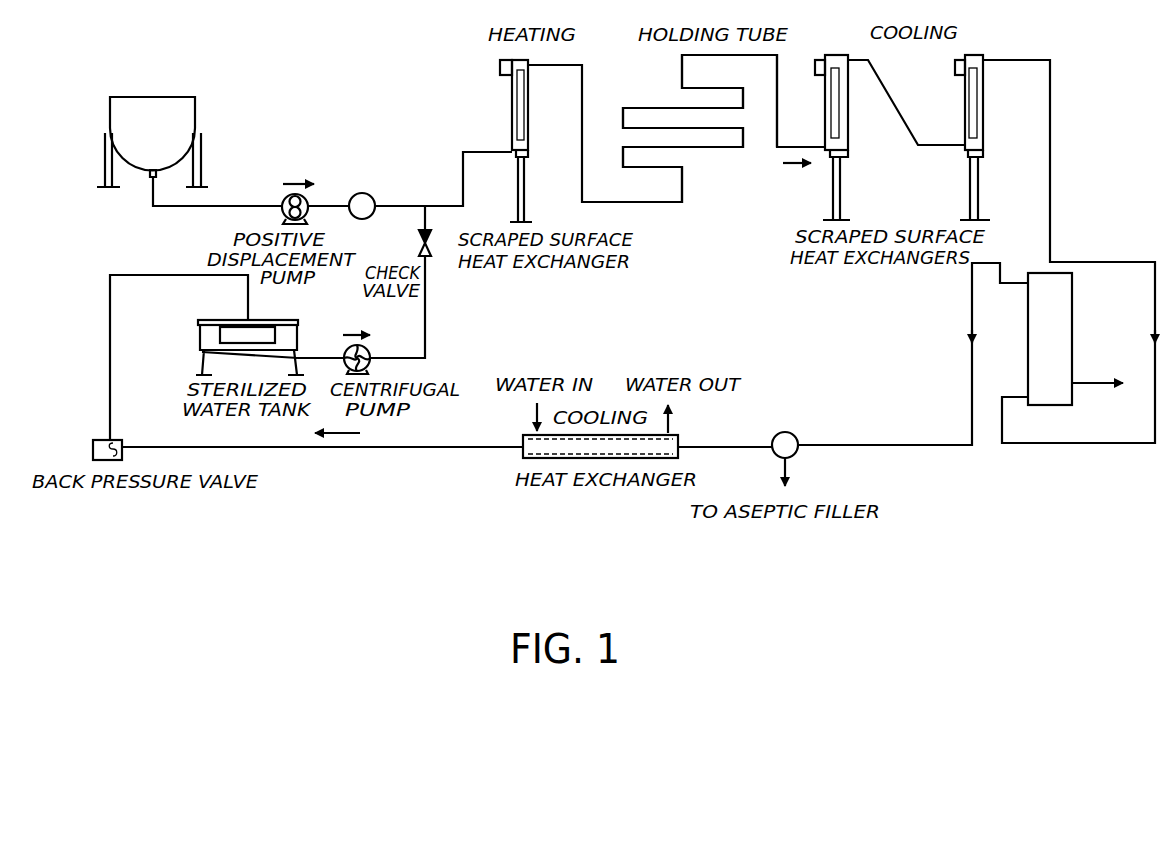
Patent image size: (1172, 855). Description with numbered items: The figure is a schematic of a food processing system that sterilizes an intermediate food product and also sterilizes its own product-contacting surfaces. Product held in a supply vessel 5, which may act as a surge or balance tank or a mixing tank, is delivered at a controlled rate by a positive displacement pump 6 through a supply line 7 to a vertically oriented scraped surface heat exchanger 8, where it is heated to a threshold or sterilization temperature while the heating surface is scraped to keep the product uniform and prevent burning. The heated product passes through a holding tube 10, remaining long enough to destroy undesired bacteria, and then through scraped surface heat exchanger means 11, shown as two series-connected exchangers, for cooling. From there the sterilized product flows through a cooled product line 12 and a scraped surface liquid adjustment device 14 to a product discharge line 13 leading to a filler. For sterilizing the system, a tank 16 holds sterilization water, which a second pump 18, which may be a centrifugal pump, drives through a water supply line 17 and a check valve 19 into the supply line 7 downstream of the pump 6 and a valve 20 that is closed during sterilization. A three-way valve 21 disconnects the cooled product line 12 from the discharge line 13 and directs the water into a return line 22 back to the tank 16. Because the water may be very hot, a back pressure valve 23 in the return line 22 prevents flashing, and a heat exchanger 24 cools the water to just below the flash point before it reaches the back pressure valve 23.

The supply vessel 5 is at (110, 114).
The positive displacement pump 6 is at (282, 200).
The supply line 7 is at (463, 166).
The scraped surface heat exchanger 8 is at (511, 96).
The holding tube 10 is at (682, 67).
The scraped surface heat exchanger means 11 is at (972, 185).
The cooled product line 12 is at (1051, 212).
The product discharge line 13 is at (788, 470).
The scraped surface liquid adjustment device 14 is at (1073, 320).
The tank 16 is at (200, 348).
The water supply line 17 is at (427, 331).
The second pump 18 is at (371, 362).
The check valve 19 is at (419, 250).
The valve 20 is at (374, 198).
The 3-way valve 21 is at (812, 410).
The line 22 is at (318, 450).
The back pressure valve 23 is at (93, 448).
The heat exchanger 24 is at (522, 452).